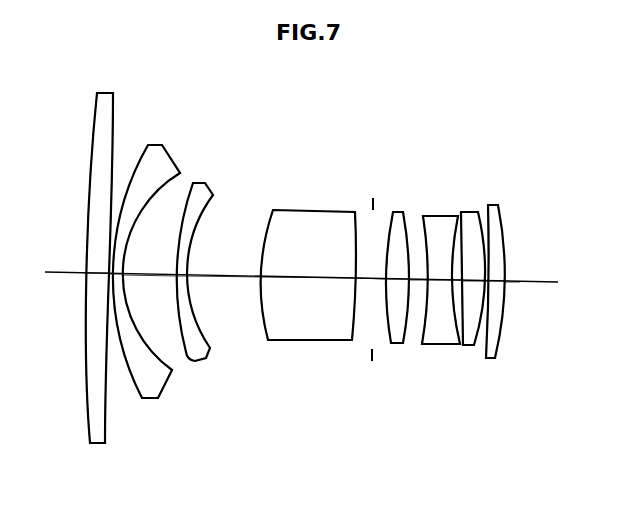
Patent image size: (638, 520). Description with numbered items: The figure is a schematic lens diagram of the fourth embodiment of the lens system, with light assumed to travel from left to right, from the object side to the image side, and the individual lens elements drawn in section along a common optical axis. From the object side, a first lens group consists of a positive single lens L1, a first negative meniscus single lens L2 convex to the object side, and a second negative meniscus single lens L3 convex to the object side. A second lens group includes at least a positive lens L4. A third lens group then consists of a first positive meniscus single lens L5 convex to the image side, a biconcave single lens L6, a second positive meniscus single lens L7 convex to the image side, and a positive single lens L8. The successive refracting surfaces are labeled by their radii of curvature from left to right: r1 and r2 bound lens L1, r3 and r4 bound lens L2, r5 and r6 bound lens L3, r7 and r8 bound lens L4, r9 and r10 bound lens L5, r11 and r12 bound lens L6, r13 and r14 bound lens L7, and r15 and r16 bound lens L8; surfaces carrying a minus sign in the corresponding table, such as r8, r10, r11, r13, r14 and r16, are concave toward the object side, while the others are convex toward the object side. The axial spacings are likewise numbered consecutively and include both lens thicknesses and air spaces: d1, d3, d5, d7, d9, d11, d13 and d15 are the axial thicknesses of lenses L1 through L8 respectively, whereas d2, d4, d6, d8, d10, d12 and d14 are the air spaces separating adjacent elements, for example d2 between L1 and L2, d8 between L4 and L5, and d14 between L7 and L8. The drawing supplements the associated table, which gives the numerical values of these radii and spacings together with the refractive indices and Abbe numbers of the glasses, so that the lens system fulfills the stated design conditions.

The positive single lens L1 is at (105, 105).
The first negative meniscus single lens L2 is at (158, 152).
The second negative meniscus single lens L3 is at (205, 192).
The positive lens L4 is at (308, 215).
The first positive meniscus single lens L5 is at (400, 213).
The biconcave single lens L6 is at (445, 218).
The second positive meniscus single lens L7 is at (468, 212).
The positive single lens L8 is at (497, 205).
The axial distance d1 is at (92, 266).
The axial distance d2 is at (110, 278).
The axial distance d3 is at (118, 252).
The axial distance d4 is at (128, 275).
The axial distance d5 is at (182, 250).
The axial distance d6 is at (224, 274).
The axial distance d7 is at (316, 276).
The axial distance d8 is at (389, 278).
The axial distance d9 is at (393, 280).
The axial distance d10 is at (418, 268).
The axial distance d11 is at (445, 262).
The axial distance d12 is at (466, 262).
The axial distance d13 is at (480, 242).
The axial distance d14 is at (503, 300).
The axial distance d15 is at (495, 278).
The radius of curvature r1 is at (85, 403).
The radius of curvature r2 is at (108, 428).
The radius of curvature r3 is at (130, 382).
The radius of curvature r4 is at (163, 373).
The radius of curvature r5 is at (193, 358).
The radius of curvature r6 is at (213, 328).
The radius of curvature r7 is at (262, 332).
The radius of curvature r8 is at (350, 332).
The radius of curvature r9 is at (385, 345).
The radius of curvature r10 is at (400, 348).
The radius of curvature r11 is at (423, 346).
The radius of curvature r12 is at (458, 348).
The radius of curvature r13 is at (468, 348).
The radius of curvature r14 is at (486, 358).
The radius of curvature r15 is at (495, 360).
The radius of curvature r16 is at (500, 352).